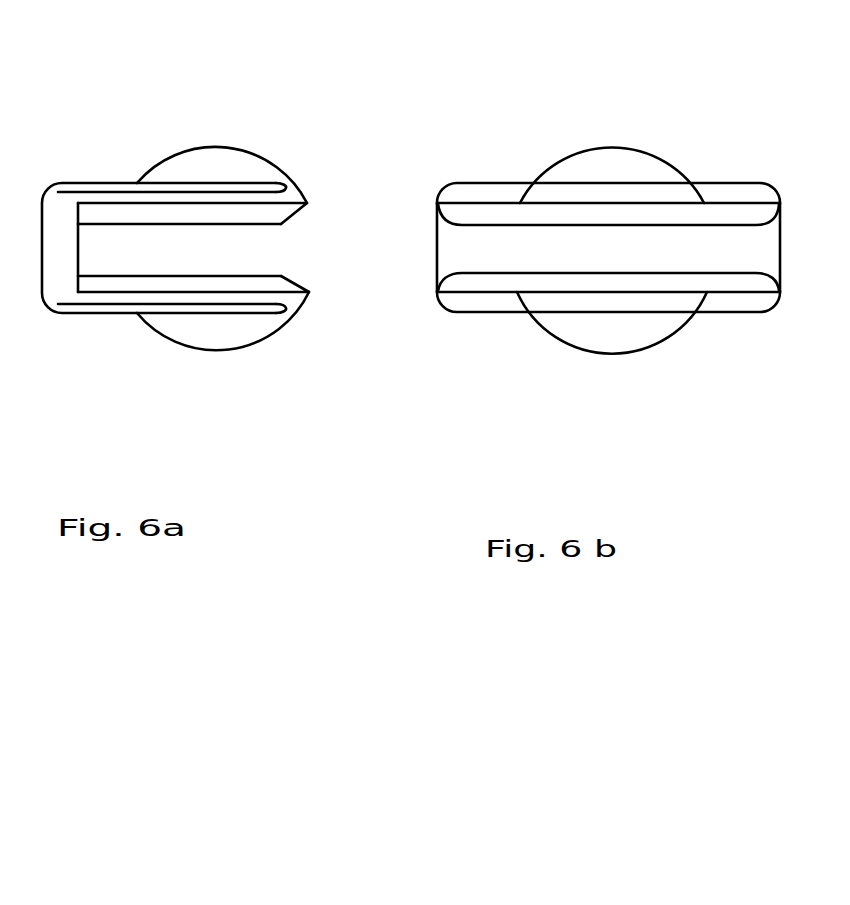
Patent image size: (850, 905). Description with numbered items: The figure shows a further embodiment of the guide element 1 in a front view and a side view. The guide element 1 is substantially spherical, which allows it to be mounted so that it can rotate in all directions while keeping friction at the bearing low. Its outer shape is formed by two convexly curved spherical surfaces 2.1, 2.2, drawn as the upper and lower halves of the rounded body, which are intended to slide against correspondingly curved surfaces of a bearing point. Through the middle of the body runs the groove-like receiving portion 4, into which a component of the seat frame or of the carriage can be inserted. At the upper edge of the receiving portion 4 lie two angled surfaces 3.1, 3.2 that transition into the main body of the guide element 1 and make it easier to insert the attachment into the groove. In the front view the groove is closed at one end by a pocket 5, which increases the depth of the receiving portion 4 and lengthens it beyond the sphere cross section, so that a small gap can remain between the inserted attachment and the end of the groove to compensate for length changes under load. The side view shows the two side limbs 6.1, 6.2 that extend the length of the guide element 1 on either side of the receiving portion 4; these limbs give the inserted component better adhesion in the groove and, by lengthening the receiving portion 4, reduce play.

In FIG. 6A, the guide element 1 is at (187, 189).
In FIG. 6B, the guide element 1 is at (609, 189).
In FIG. 6A, the convexly curved spherical surface 2.1 is at (280, 168).
In FIG. 6B, the convexly curved spherical surface 2.1 is at (660, 161).
In FIG. 6A, the convexly curved spherical surface 2.2 is at (275, 338).
In FIG. 6B, the convexly curved spherical surface 2.2 is at (668, 333).
In FIG. 6A, the angled surface 3.1 is at (290, 215).
In FIG. 6B, the angled surface 3.1 is at (438, 209).
In FIG. 6A, the angled surface 3.2 is at (294, 279).
In FIG. 6B, the angled surface 3.2 is at (438, 287).
In FIG. 6A, the receiving portion 4 is at (182, 248).
In FIG. 6B, the receiving portion 4 is at (608, 247).
In FIG. 6A, the pocket 5 is at (159, 248).
In FIG. 6B, the side limb 6.1 is at (475, 193).
In FIG. 6B, the side limb 6.2 is at (745, 193).